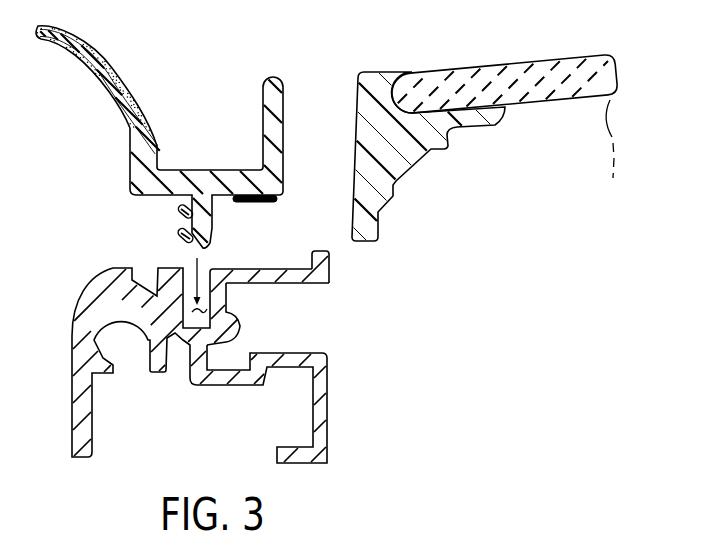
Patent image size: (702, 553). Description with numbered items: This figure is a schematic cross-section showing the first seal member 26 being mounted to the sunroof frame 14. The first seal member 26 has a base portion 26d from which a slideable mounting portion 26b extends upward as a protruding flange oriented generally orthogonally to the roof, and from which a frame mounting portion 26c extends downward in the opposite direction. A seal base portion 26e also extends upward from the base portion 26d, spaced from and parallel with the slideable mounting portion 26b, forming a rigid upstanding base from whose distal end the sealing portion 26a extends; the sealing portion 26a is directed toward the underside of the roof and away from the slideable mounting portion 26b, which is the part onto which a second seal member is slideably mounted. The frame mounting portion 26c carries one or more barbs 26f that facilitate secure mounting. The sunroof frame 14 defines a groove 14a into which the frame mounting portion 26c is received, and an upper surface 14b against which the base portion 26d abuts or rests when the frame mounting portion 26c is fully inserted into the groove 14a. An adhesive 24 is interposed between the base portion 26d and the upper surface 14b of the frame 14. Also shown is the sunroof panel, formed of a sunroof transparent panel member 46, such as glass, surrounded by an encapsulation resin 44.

The sunroof frame 14 is at (226, 348).
The groove 14a is at (203, 318).
The upper surface 14b is at (292, 268).
The adhesive 24 is at (273, 202).
The first seal member 26 is at (188, 137).
The sealing portion 26a is at (112, 78).
The slideable mounting portion 26b is at (283, 103).
The frame mounting portion 26c is at (217, 208).
The base portion 26d is at (208, 183).
The seal base portion 26e is at (138, 158).
The barbs 26f is at (180, 211).
The encapsulation resin 44 is at (398, 165).
The sunroof transparent panel member 46 is at (504, 82).